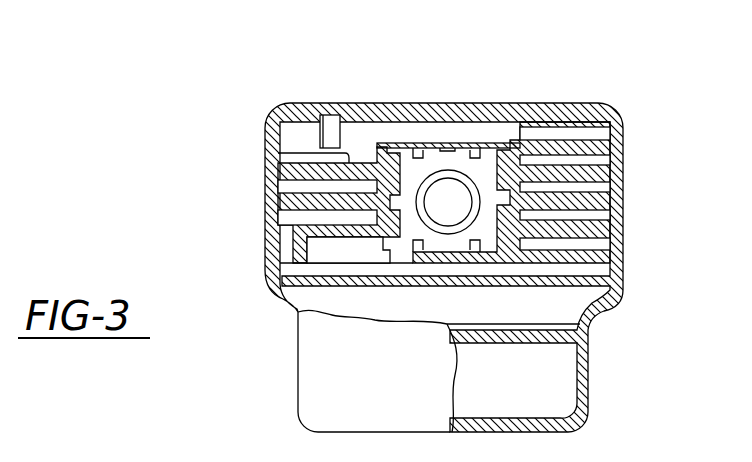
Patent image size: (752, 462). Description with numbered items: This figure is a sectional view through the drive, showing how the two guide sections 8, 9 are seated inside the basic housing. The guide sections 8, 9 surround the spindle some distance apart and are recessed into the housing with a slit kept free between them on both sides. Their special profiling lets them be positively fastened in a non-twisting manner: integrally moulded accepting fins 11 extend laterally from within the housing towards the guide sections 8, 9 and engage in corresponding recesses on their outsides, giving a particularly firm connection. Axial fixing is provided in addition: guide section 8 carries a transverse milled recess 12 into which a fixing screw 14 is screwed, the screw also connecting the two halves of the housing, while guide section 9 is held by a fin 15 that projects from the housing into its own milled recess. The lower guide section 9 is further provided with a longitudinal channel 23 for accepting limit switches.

The guide section 8 is at (519, 158).
The guide section 9 is at (333, 220).
The accepting fins 11 is at (295, 200).
The milled recess 12 is at (479, 149).
The fixing screw 14 is at (378, 133).
The fin 15 is at (482, 257).
The longitudinal channel 23 is at (330, 256).